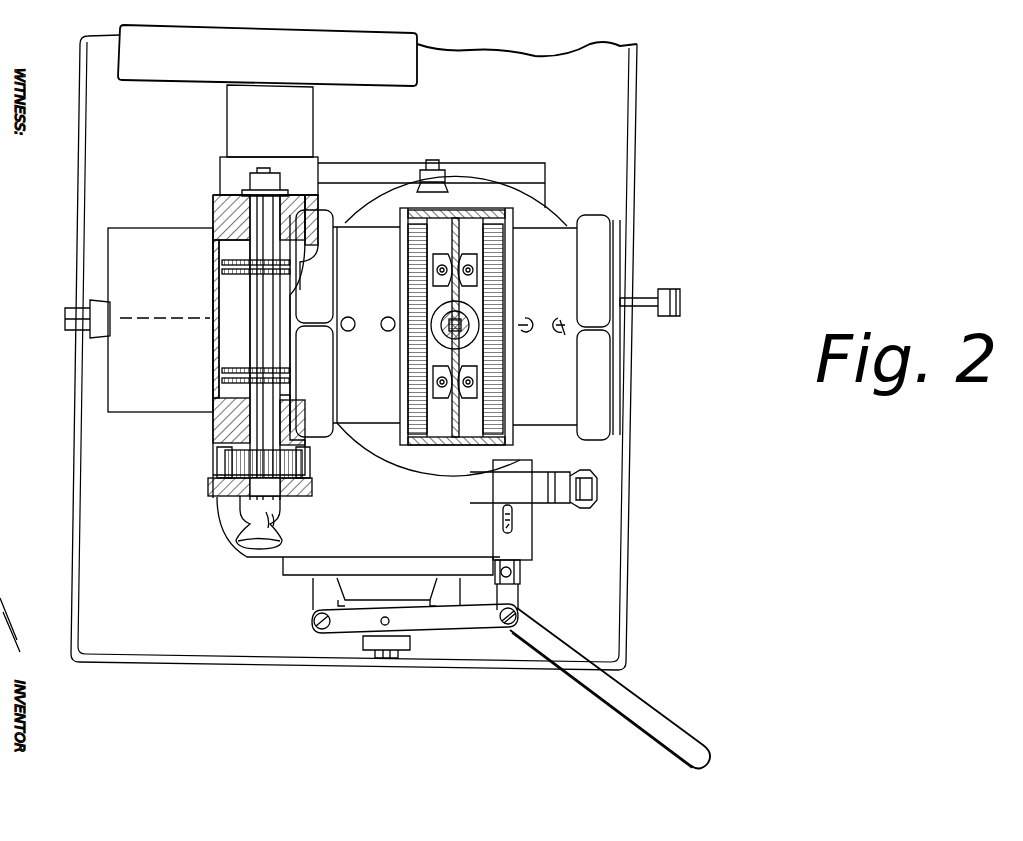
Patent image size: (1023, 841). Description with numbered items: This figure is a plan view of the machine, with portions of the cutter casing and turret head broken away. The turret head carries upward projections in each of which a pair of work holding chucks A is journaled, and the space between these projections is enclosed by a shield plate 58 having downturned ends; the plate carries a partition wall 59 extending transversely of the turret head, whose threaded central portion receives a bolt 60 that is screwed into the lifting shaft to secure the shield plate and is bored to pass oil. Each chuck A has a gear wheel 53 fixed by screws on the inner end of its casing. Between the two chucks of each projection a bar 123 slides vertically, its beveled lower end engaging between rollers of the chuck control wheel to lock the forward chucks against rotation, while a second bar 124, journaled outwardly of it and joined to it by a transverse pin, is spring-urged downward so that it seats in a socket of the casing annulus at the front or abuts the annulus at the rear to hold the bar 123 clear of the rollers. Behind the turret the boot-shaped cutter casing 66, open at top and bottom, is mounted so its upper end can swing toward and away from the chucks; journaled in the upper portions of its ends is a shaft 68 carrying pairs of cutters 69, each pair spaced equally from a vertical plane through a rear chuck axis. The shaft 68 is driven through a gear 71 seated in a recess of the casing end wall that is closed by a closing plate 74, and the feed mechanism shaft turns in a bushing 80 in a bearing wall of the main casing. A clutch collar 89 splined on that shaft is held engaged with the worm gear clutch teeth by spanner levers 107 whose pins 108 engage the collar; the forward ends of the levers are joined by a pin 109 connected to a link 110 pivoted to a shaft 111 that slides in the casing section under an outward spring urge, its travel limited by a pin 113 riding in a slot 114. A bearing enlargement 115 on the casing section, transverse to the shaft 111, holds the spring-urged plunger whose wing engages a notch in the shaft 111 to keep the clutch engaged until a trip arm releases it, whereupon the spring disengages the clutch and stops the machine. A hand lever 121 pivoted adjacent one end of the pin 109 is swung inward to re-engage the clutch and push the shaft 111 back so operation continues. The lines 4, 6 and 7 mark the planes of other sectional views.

The section line 4- 4 is at (45, 330).
The section line 6- 6 is at (660, 520).
The section line 7- 7 is at (665, 490).
The gear wheel 53 is at (412, 220).
The shield plate 58 is at (468, 208).
The partition wall 59 is at (450, 220).
The bolt 60 is at (478, 318).
The cutter casing 66 is at (228, 288).
The cutter shaft 68 is at (251, 326).
The cutters 69 is at (228, 270).
The gear 71 is at (238, 460).
The closing plate 74 is at (211, 487).
The bushing 80 is at (517, 550).
The clutch collar 89 is at (410, 650).
The spanner levers 107 is at (478, 616).
The pins 108 is at (382, 622).
The pin 109 is at (518, 616).
The link 110 is at (514, 592).
The shaft 111 is at (520, 576).
The pin 113 is at (503, 518).
The slot 114 is at (502, 528).
The bearing enlargement 115 is at (548, 470).
The hand lever 121 is at (667, 725).
The bar 123 is at (522, 322).
The second bar 124 is at (563, 332).
The chucks A is at (320, 330).